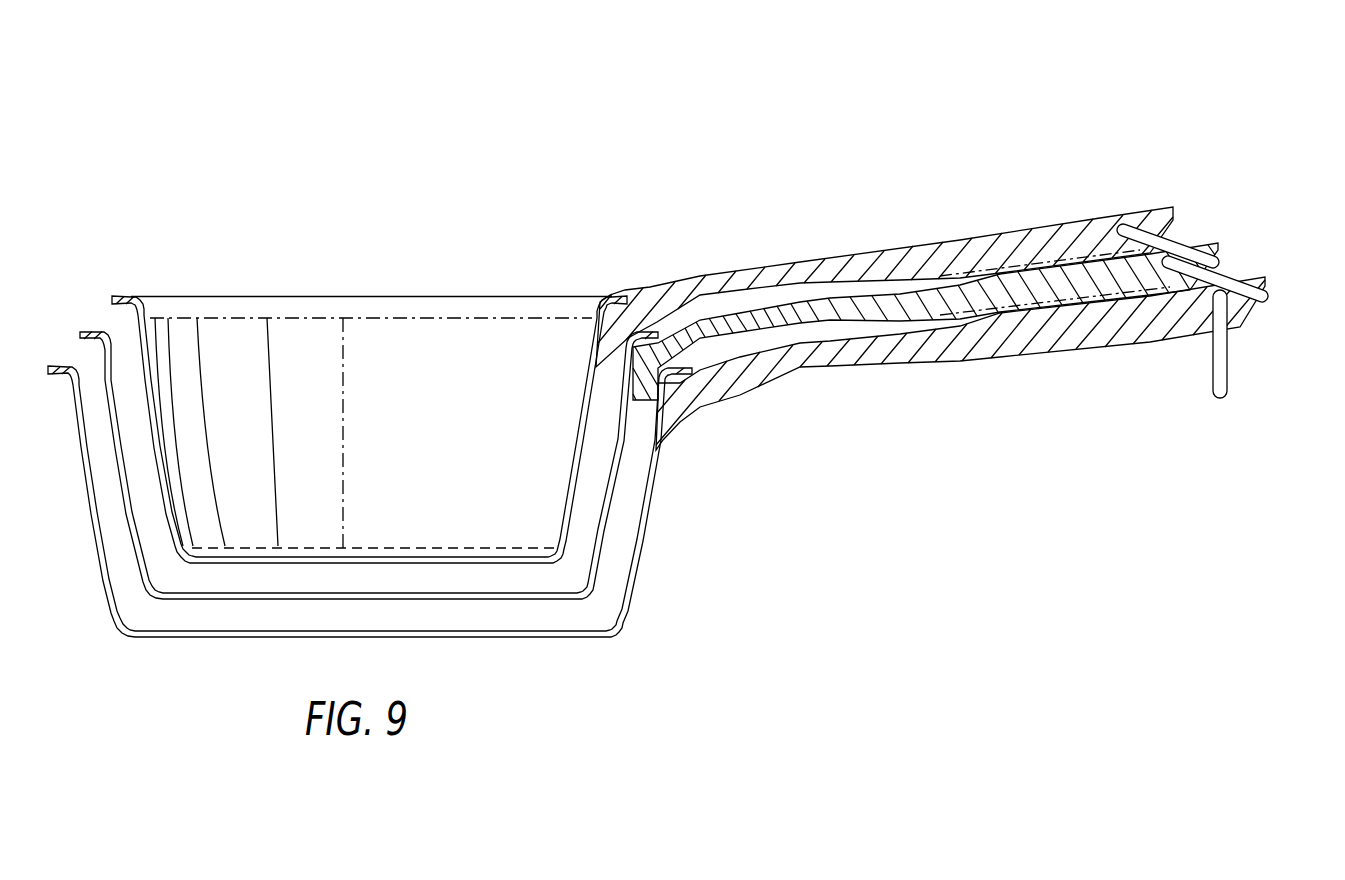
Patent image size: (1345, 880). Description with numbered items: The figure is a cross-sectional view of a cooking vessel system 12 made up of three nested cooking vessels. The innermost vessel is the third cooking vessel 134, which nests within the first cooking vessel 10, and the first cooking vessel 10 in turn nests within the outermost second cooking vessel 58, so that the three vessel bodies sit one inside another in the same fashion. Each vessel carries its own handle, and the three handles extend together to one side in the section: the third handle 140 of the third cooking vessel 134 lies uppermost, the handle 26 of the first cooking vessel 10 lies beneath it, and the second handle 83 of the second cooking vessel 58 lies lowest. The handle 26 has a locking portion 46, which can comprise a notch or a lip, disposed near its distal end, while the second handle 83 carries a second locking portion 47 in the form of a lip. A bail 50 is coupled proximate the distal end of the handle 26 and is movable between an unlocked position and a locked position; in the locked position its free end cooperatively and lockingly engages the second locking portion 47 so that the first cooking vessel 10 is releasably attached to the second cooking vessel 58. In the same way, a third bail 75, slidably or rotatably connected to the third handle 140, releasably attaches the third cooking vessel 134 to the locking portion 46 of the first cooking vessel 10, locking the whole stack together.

The first cooking vessel 10 is at (624, 453).
The cooking vessel system 12 is at (942, 277).
The handle 26 is at (935, 318).
The locking portion 46 is at (1228, 218).
The second locking portion 47 is at (1295, 260).
The bail 50 is at (1226, 277).
The second cooking vessel 58 is at (643, 547).
The third bail 75 is at (1170, 246).
The second handle 83 is at (1015, 350).
The third cooking vessel 134 is at (613, 297).
The third handle 140 is at (978, 245).